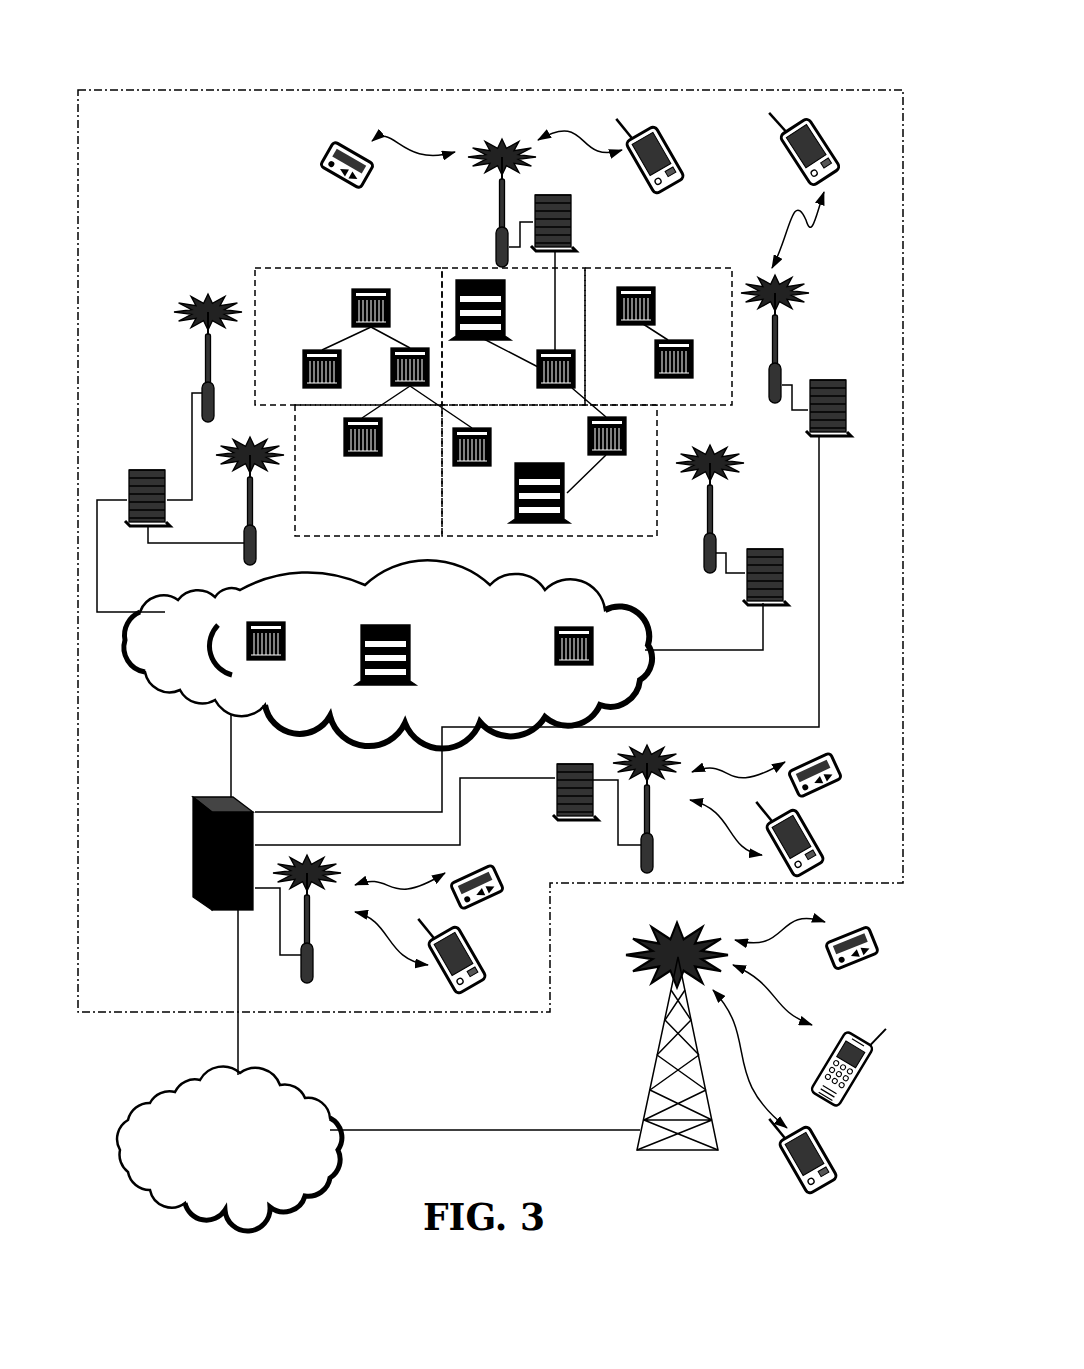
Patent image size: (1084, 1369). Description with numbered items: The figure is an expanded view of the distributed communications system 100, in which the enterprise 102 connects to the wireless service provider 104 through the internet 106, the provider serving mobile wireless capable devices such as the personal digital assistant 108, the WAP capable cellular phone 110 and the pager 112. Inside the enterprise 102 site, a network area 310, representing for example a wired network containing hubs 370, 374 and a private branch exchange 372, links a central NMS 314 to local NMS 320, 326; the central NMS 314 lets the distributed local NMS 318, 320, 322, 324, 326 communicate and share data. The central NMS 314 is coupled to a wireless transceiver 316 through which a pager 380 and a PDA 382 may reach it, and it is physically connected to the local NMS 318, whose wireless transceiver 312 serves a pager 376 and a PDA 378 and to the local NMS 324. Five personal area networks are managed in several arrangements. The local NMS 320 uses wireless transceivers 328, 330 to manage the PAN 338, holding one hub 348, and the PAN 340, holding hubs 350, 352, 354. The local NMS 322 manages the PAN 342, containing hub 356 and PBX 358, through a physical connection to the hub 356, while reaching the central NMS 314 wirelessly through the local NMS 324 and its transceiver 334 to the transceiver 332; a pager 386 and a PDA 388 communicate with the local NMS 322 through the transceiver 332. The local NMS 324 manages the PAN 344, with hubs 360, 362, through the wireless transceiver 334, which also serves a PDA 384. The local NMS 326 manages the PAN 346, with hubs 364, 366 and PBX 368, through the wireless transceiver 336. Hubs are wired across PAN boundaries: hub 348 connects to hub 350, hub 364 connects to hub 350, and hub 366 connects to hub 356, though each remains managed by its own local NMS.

The distributed communications system 100 is at (740, 58).
The enterprise 102 is at (410, 1014).
The wireless service provider 104 is at (652, 1045).
The internet 106 is at (140, 1192).
The personal digital assistant 108 is at (787, 1182).
The WAP capable cellular phone 110 is at (866, 1030).
The pager 112 is at (845, 928).
The network area 310 is at (180, 692).
The wireless transceiver 312 is at (670, 810).
The central NMS 314 is at (172, 845).
The wireless transceiver 316 is at (340, 920).
The local NMS 318 is at (540, 786).
The local NMS 320 is at (140, 457).
The local NMS 322 is at (568, 222).
The local NMS 324 is at (826, 370).
The local NMS 326 is at (760, 542).
The wireless transceiver 328 is at (224, 490).
The wireless transceiver 330 is at (186, 338).
The wireless transceiver 332 is at (492, 224).
The wireless transceiver 334 is at (768, 388).
The wireless transceiver 336 is at (705, 570).
The personal area network 338 is at (378, 542).
The personal area network 340 is at (309, 263).
The personal area network 342 is at (458, 263).
The personal area network 344 is at (632, 263).
The personal area network 346 is at (610, 543).
The hub 348 is at (372, 457).
The hub 350 is at (383, 355).
The hub 352 is at (298, 365).
The hub 354 is at (343, 313).
The hub 356 is at (542, 343).
The PBX 358 is at (457, 343).
The hub 360 is at (660, 310).
The hub 362 is at (642, 352).
The hub 364 is at (497, 450).
The hub 366 is at (612, 458).
The PBX 368 is at (500, 515).
The hub 370 is at (300, 658).
The PBX 372 is at (433, 648).
The hub 374 is at (546, 644).
The pager 376 is at (800, 760).
The PDA 378 is at (810, 835).
The pager 380 is at (472, 868).
The PDA 382 is at (472, 942).
The PDA 384 is at (826, 135).
The pager 386 is at (336, 146).
The PDA 388 is at (672, 152).